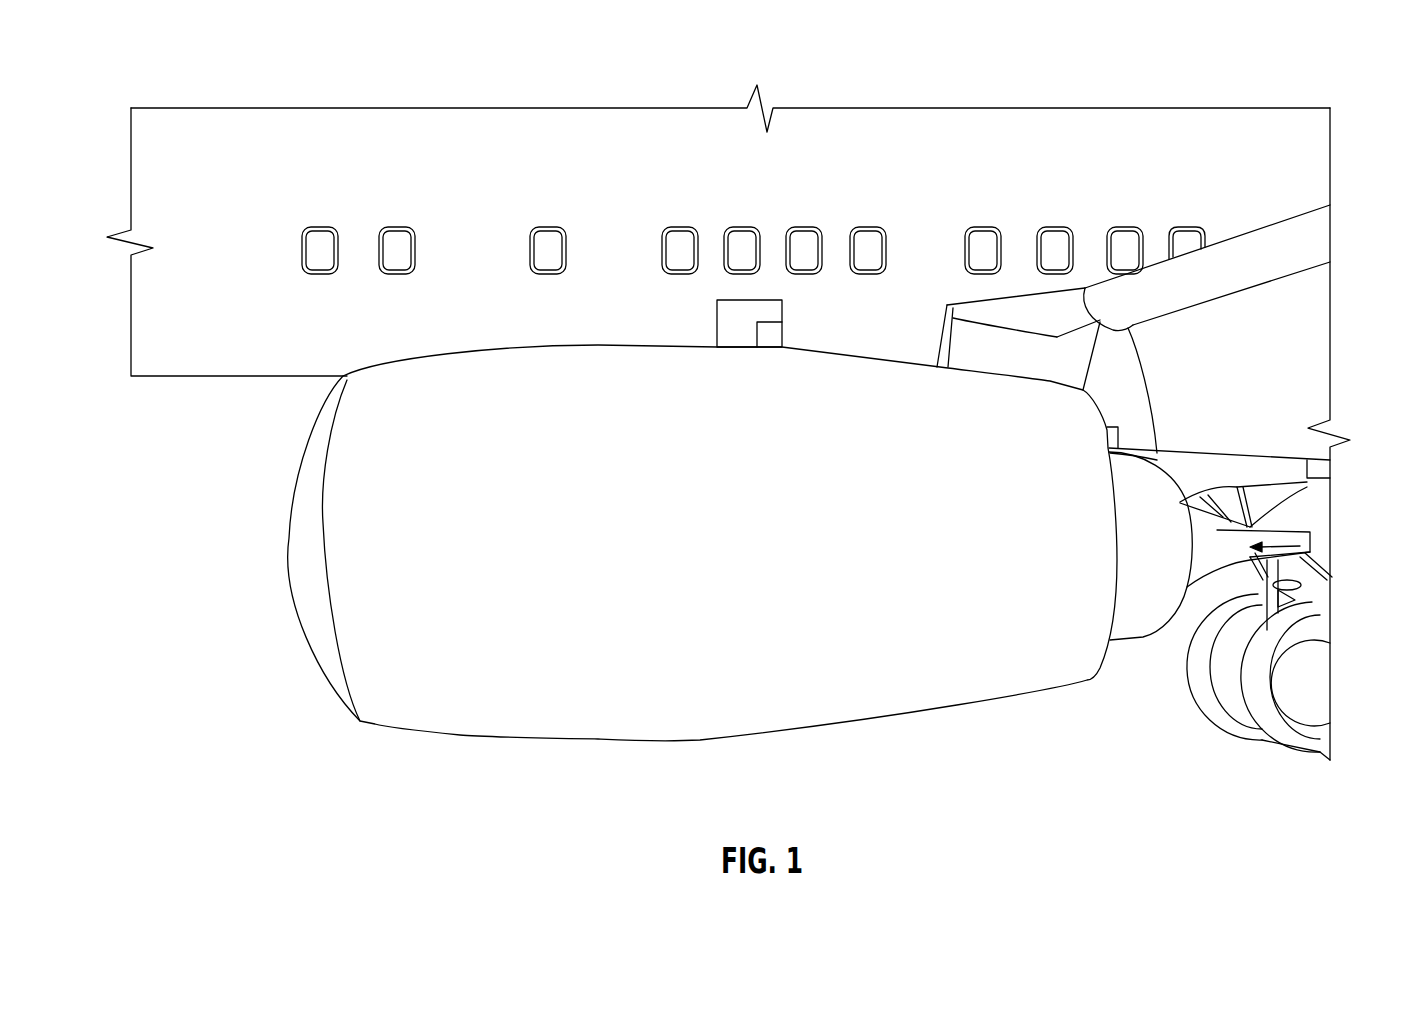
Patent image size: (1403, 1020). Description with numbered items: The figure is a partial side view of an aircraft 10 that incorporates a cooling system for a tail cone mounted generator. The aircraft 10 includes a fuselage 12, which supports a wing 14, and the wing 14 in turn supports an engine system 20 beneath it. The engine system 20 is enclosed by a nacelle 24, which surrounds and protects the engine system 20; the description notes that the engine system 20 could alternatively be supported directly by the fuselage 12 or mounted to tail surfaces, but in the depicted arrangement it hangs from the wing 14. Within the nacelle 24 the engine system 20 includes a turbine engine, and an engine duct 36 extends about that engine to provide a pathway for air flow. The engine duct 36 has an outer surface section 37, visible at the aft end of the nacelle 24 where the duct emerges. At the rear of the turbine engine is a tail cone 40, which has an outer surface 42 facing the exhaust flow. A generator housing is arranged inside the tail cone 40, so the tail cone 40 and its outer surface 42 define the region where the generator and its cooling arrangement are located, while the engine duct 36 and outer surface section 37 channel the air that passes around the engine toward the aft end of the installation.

The aircraft 10 is at (804, 569).
The fuselage 12 is at (937, 127).
The wing 14 is at (1310, 342).
The engine system 20 is at (552, 716).
The nacelle 24 is at (364, 437).
The engine duct 36 is at (1136, 624).
The outer surface section 37 is at (1155, 482).
The tail cone 40 is at (1310, 537).
The outer surface 42 is at (1307, 482).